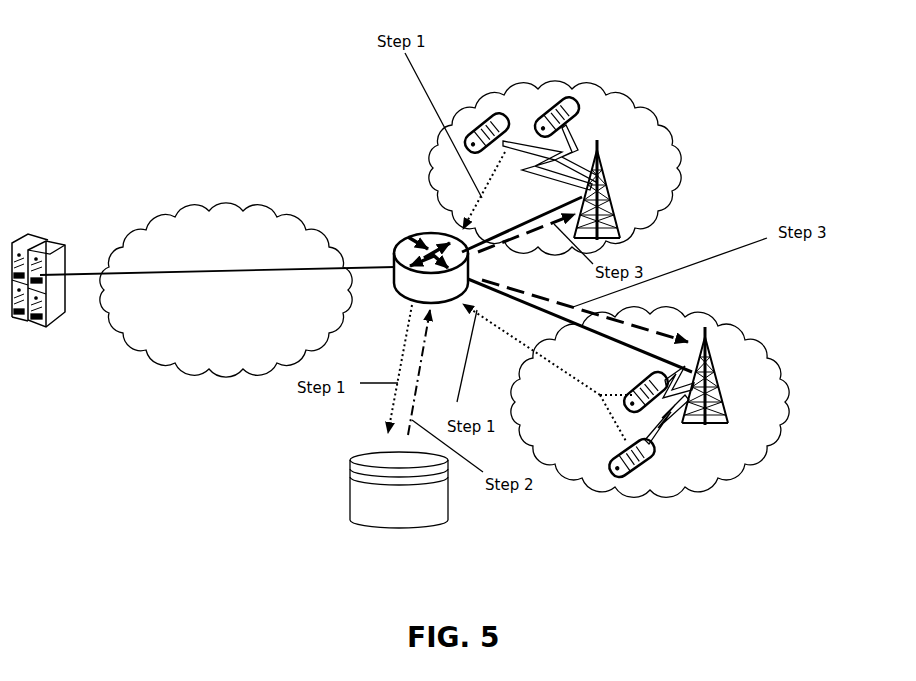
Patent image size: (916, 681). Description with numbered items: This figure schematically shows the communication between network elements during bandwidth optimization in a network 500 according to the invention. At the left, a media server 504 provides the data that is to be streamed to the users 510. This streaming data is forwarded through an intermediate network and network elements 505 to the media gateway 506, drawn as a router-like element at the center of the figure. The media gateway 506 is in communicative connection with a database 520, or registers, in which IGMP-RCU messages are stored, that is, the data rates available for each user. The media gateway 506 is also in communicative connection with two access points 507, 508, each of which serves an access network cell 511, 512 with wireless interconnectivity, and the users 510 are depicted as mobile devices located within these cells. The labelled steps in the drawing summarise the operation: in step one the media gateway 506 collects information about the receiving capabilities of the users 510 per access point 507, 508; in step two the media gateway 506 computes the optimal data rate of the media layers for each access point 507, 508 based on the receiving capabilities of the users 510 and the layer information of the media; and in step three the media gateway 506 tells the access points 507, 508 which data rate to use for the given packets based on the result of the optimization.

The network 500 is at (153, 437).
The media server 504 is at (31, 228).
The intermediate network and network elements 505 is at (185, 307).
The media gateway 506 is at (407, 247).
The access point 507 is at (613, 218).
The access point 508 is at (723, 398).
The users 510 is at (495, 118).
The access network cell 511 is at (630, 125).
The access network cell 512 is at (747, 383).
The database 520 is at (399, 490).